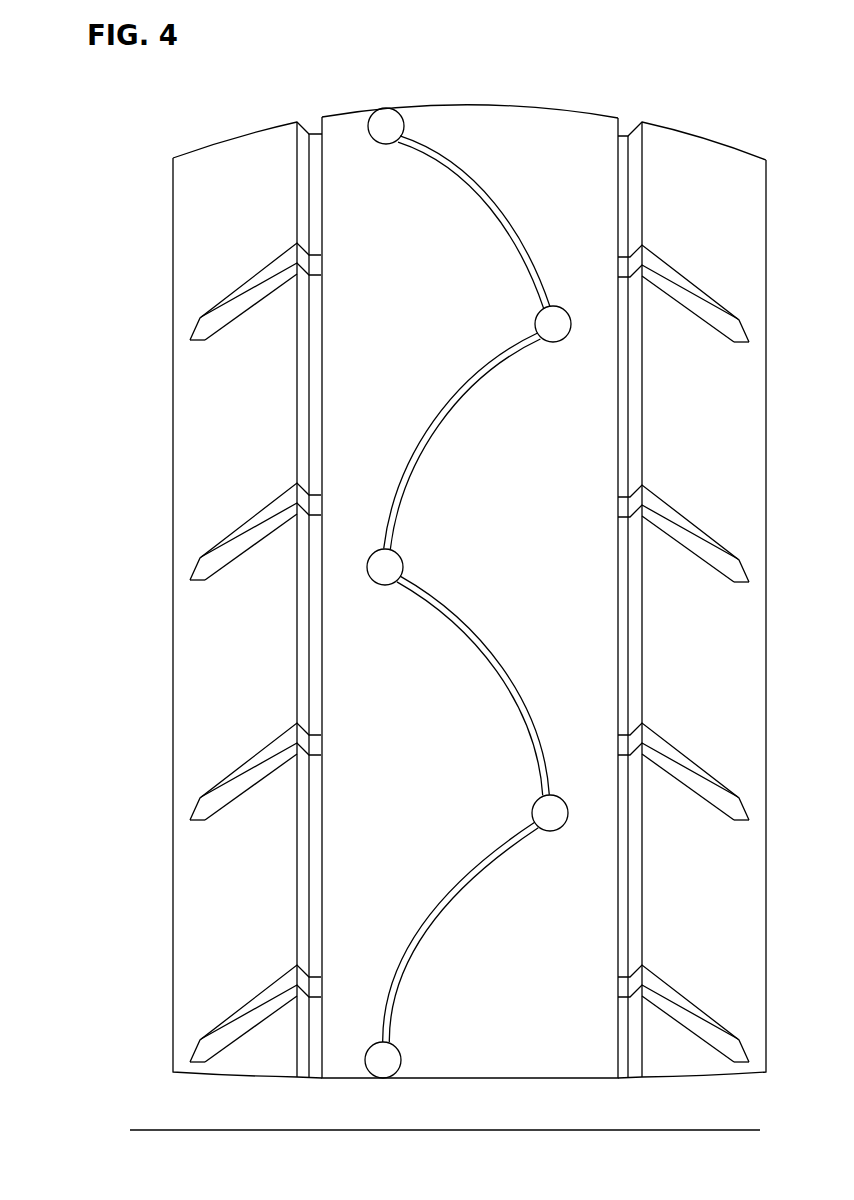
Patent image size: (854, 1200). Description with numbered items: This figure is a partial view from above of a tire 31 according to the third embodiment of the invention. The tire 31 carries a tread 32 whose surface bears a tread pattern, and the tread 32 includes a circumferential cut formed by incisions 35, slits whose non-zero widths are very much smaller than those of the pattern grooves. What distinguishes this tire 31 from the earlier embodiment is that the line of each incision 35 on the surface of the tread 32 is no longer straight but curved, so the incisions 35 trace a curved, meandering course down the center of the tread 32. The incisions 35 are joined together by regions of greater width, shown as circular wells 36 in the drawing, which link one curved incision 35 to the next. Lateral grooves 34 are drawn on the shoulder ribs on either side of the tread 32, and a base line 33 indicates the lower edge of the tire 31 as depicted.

The tire 31 is at (107, 343).
The tread 32 is at (553, 143).
The ground contact surface 33 is at (293, 1075).
The shoulder lug groove 34 is at (732, 792).
The incisions 35 is at (447, 417).
The circular groove recess 36 is at (542, 323).